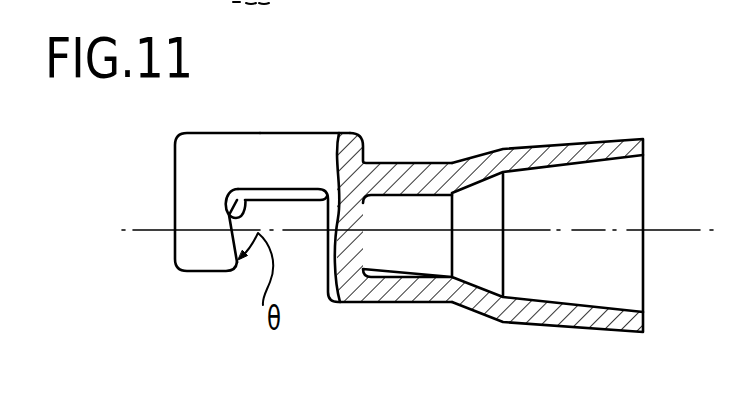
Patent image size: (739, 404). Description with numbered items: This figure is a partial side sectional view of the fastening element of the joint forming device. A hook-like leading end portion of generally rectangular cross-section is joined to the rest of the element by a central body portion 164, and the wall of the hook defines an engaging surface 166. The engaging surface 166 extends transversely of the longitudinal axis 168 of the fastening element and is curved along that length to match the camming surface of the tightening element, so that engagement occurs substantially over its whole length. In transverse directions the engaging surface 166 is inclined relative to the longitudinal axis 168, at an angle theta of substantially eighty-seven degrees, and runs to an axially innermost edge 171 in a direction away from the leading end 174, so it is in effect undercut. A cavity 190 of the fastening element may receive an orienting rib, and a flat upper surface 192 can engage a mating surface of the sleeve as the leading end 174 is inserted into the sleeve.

The central body portion 164 is at (257, 163).
The engaging surface 166 is at (238, 190).
The longitudinal axis 168 is at (152, 231).
The axially innermost edge 171 is at (237, 270).
The leading end 174 is at (176, 187).
The cavity 190 is at (584, 277).
The flat upper surface 192 is at (302, 133).